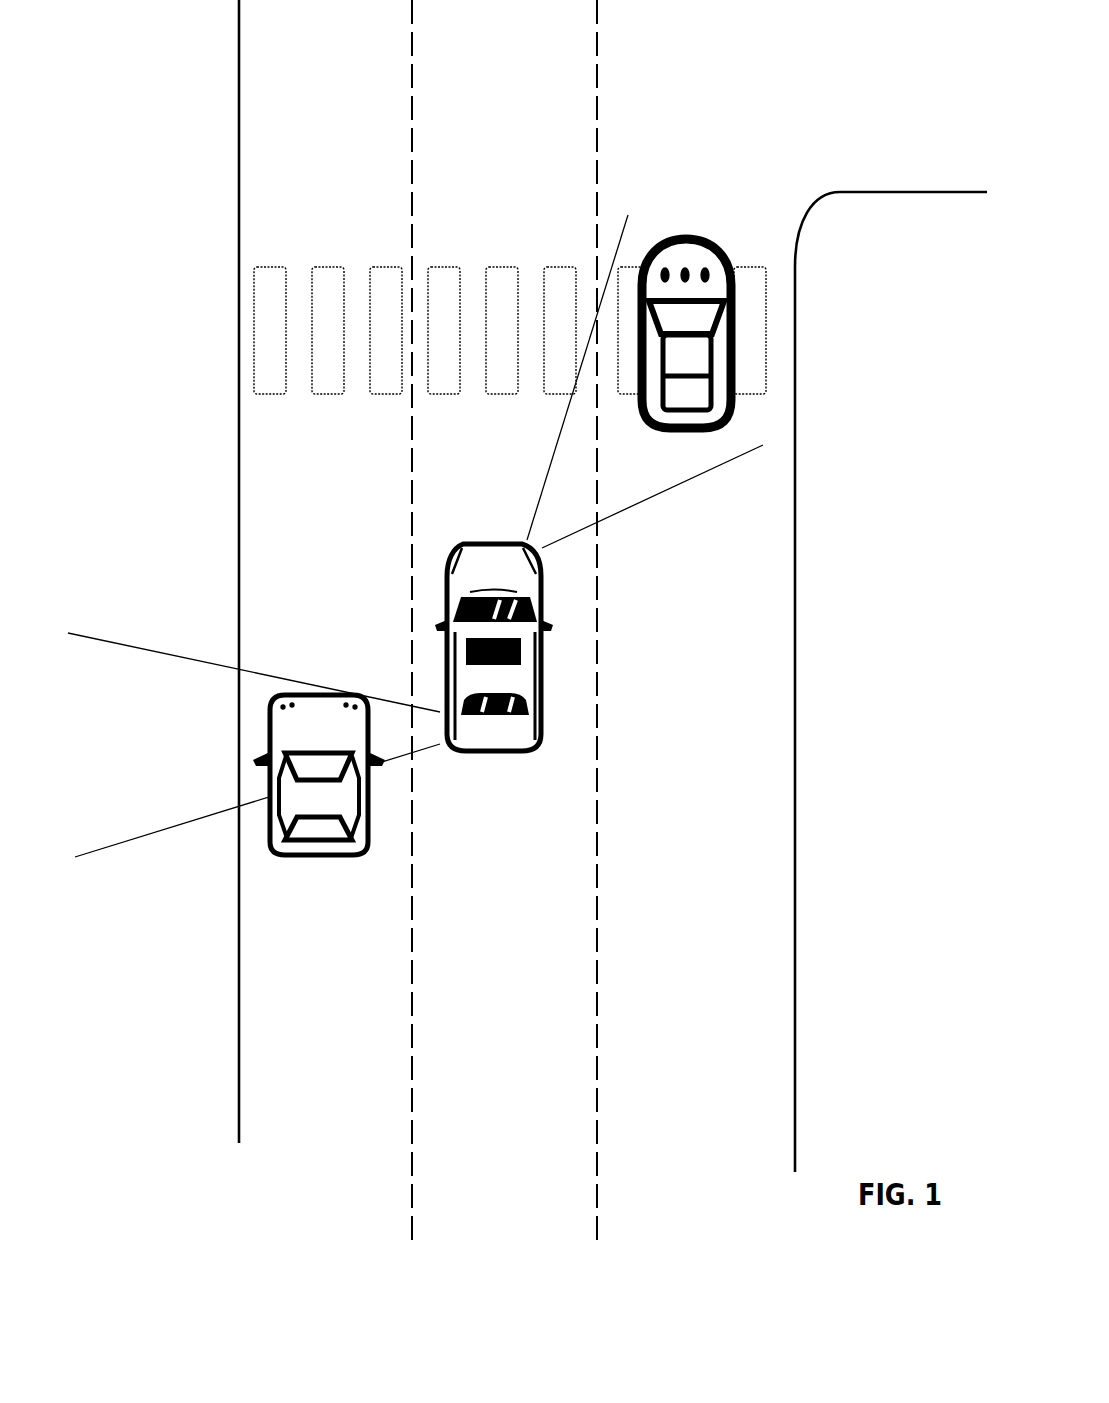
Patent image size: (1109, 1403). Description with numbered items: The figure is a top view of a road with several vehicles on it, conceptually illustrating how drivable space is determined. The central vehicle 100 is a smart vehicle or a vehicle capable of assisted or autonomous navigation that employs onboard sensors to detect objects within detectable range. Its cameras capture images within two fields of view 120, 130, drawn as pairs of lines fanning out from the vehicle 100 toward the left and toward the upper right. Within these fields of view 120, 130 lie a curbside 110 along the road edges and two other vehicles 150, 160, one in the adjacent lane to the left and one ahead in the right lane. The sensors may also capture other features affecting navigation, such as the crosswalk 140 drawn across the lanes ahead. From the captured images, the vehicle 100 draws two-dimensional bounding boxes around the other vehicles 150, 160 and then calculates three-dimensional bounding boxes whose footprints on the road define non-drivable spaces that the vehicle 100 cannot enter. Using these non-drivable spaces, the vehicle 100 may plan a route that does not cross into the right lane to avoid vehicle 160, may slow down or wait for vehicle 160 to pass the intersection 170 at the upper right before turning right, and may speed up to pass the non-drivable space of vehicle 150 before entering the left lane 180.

The vehicle 100 is at (512, 752).
The curbside 110 is at (239, 152).
The field of view 120 is at (147, 650).
The field of view 130 is at (660, 493).
The crosswalk 140 is at (387, 394).
The other vehicle 150 is at (320, 860).
The other vehicle 160 is at (667, 432).
The intersection 170 is at (778, 49).
The left lane 180 is at (338, 541).